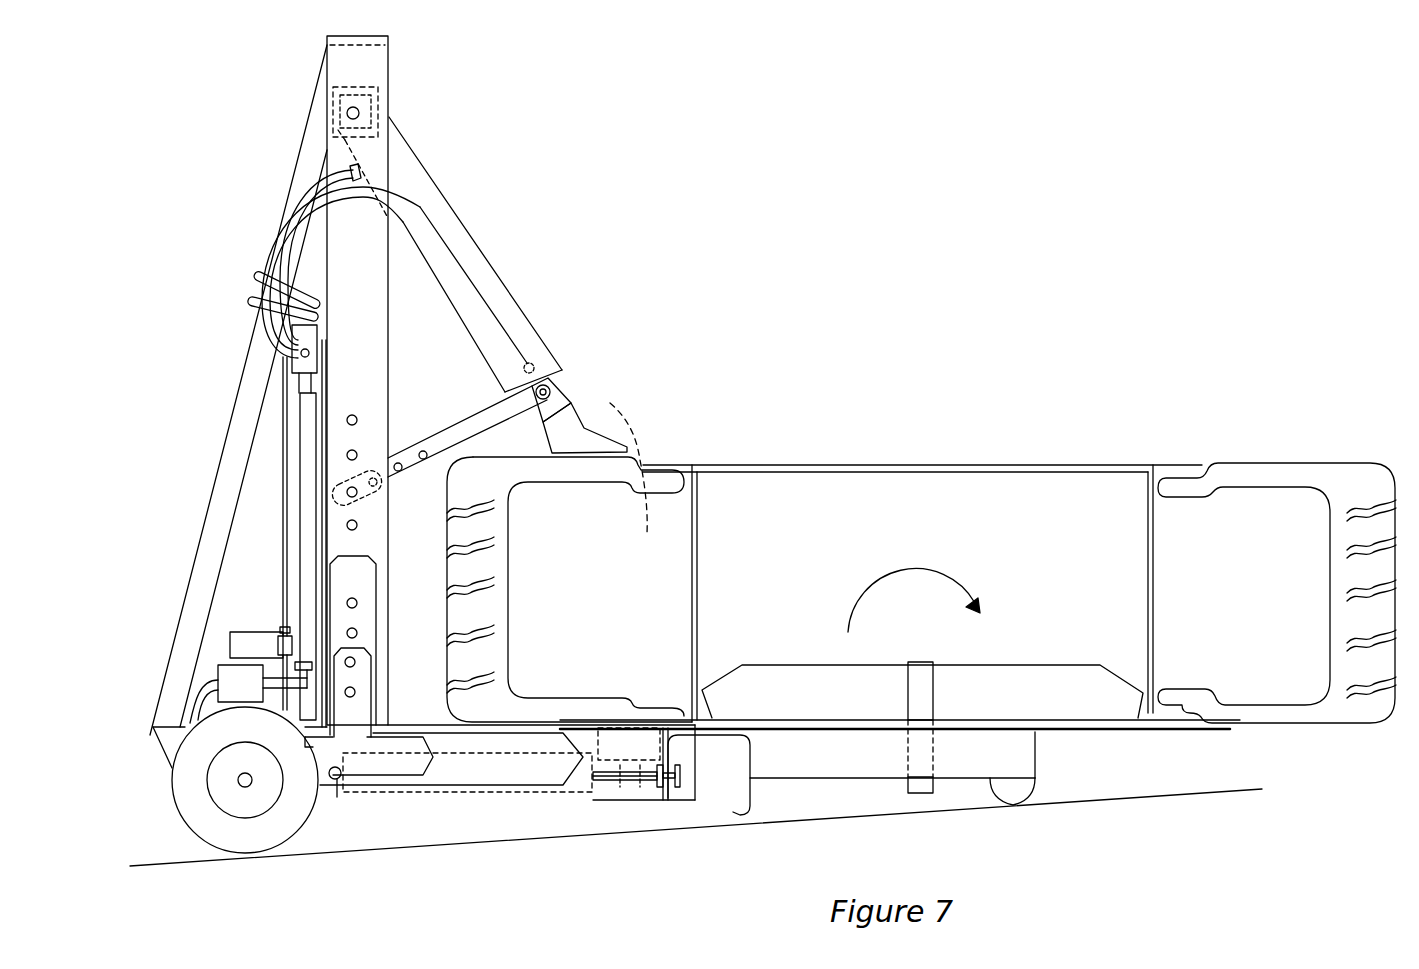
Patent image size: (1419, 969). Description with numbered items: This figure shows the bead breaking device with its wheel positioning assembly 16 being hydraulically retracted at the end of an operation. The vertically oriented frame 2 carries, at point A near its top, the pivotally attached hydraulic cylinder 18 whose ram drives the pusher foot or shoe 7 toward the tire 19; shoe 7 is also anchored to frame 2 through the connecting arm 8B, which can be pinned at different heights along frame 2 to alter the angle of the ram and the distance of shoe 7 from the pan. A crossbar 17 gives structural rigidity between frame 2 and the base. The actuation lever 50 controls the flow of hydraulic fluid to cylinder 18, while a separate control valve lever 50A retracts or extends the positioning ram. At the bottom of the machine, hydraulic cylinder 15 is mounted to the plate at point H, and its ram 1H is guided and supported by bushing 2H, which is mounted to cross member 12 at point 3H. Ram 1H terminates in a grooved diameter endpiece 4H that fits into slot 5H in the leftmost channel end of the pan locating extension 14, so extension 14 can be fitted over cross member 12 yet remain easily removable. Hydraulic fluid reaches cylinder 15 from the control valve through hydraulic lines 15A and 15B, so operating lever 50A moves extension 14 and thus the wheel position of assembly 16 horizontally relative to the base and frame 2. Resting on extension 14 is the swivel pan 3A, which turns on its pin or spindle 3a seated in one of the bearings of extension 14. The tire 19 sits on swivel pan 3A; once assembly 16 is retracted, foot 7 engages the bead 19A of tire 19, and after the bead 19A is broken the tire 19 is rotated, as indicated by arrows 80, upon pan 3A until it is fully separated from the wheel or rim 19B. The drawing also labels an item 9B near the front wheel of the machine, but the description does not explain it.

The frame 2 is at (370, 331).
The pivot point A is at (358, 110).
The hydraulic cylinder 18 is at (458, 240).
The control valve lever 50A is at (253, 273).
The actuation lever 50 is at (248, 300).
The crossbar 17 is at (256, 388).
The connecting arm 8B is at (466, 428).
The hydraulic line 15A is at (322, 468).
The hydraulic line 15B is at (314, 560).
The wheel 9B is at (243, 782).
The pusher foot or shoe 7 is at (598, 428).
The hydraulic cylinder 15 is at (507, 771).
The point H is at (336, 784).
The cross member 12 is at (636, 759).
The ram 1H is at (610, 781).
The bushing 2H is at (632, 787).
The point 3H is at (658, 763).
The grooved diameter endpiece 4H is at (680, 775).
The slot 5H is at (682, 772).
The pan locating extension 14 is at (1035, 775).
The wheel positioning assembly 16 is at (1043, 732).
The wheel or rim 19B is at (936, 468).
The tire 19 is at (556, 472).
The bead 19A is at (688, 487).
The swivel pan 3A is at (790, 711).
The pin or spindle 3a is at (917, 706).
The arrows 80 is at (882, 612).